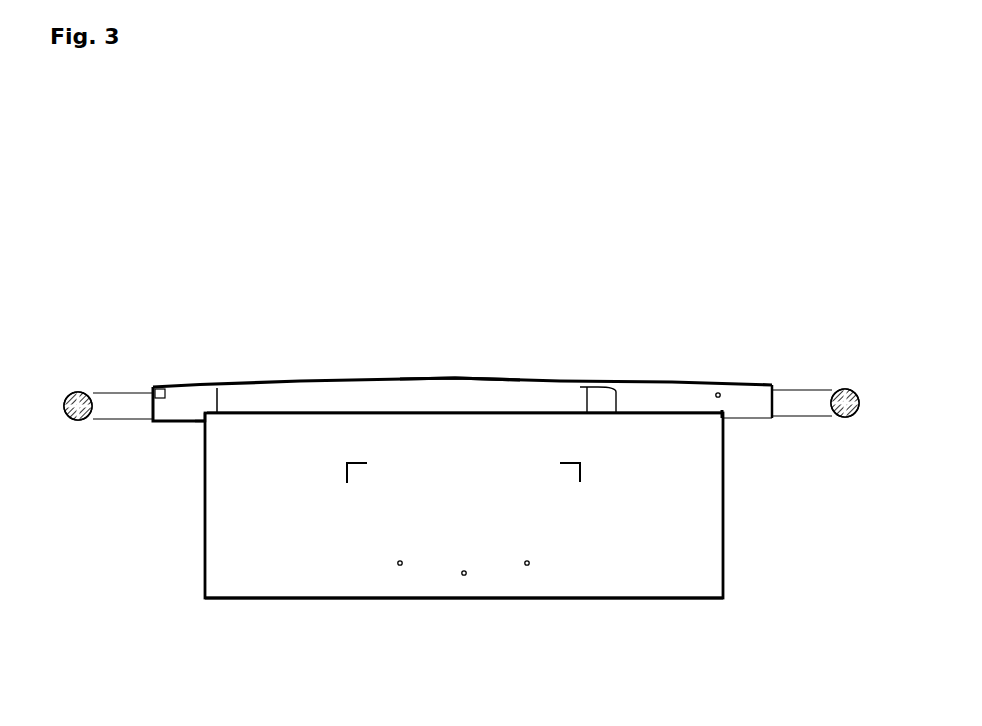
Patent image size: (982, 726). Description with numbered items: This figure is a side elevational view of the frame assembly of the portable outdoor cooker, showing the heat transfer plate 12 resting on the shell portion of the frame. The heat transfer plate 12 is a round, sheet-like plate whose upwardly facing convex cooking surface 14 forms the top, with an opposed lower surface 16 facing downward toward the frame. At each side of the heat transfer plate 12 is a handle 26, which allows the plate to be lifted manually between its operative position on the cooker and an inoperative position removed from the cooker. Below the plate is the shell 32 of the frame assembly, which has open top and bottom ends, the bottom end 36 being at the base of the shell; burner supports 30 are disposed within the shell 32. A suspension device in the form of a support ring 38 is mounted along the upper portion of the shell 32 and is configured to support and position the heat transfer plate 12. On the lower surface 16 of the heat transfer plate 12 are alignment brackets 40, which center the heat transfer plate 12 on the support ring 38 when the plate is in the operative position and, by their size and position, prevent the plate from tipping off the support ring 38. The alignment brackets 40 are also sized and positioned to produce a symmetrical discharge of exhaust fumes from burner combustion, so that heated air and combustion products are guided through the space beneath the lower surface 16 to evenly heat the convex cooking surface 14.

The heat transfer plate 12 is at (672, 380).
The convex cooking surface 14 is at (380, 380).
The lower surface 16 is at (458, 382).
The handle 26 is at (70, 397).
The burner supports 30 is at (347, 478).
The shell 32 is at (230, 575).
The bottom end 36 is at (680, 598).
The support ring 38 is at (200, 416).
The alignment brackets 40 is at (177, 407).